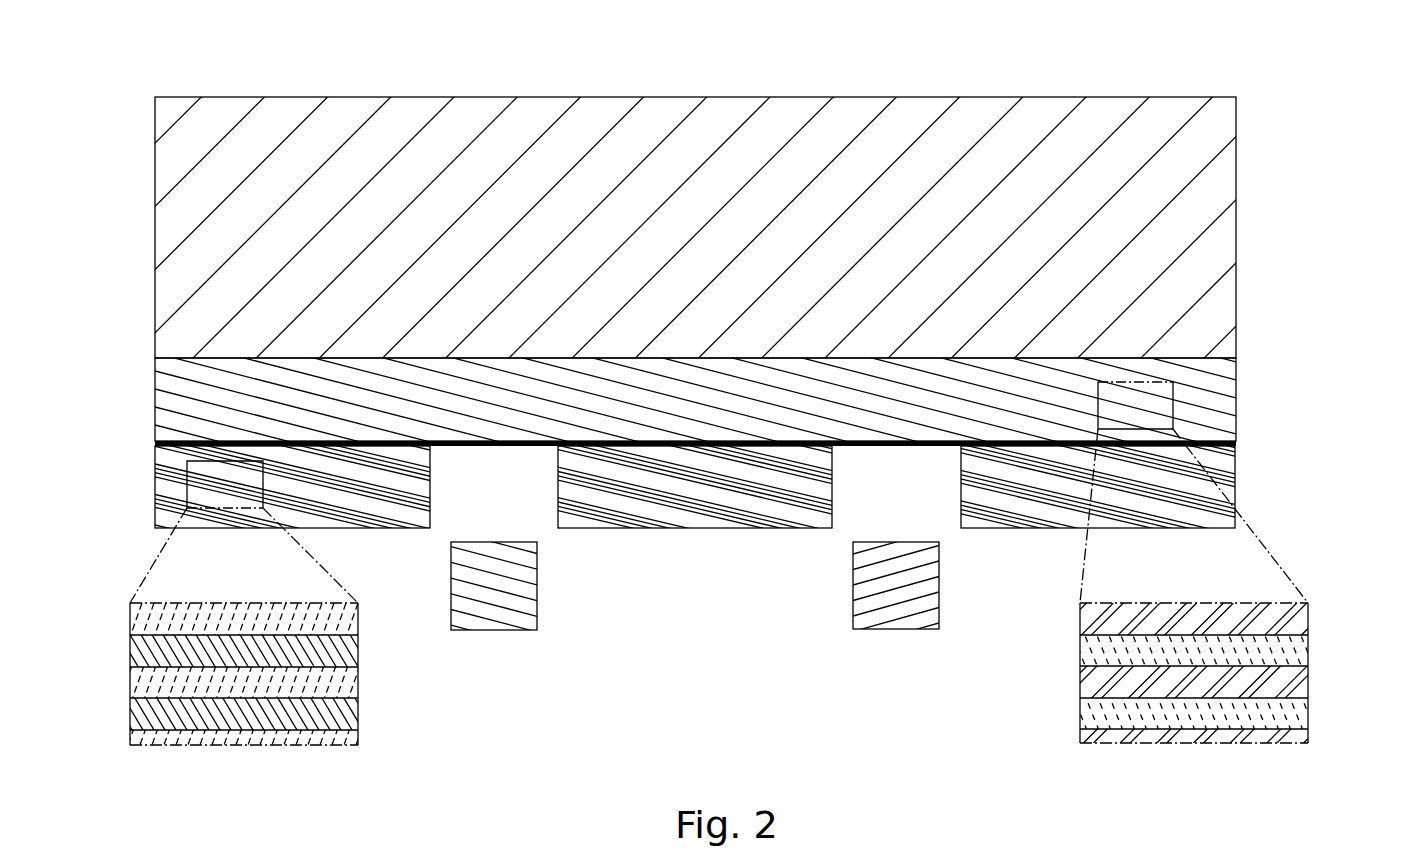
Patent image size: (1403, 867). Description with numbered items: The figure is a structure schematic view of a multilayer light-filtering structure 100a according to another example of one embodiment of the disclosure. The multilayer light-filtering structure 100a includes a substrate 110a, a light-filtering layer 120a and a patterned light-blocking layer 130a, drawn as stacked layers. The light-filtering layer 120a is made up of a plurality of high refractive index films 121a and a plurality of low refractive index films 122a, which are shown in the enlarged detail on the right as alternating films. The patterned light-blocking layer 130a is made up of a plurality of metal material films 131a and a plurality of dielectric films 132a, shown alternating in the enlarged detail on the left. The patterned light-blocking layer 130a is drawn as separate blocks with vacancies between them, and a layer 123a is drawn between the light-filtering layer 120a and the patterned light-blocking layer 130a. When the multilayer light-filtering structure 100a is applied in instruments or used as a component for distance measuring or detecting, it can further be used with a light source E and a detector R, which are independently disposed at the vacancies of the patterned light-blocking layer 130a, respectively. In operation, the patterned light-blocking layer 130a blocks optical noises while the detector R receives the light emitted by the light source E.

The multilayer light-filtering structure 100a is at (105, 56).
The substrate 110a is at (1236, 230).
The light-filtering layer 120a is at (1236, 403).
The high refractive index films 121a is at (1303, 619).
The low refractive index films 122a is at (1303, 648).
The metal layer 123a is at (615, 447).
The patterned light-blocking layer 130a is at (395, 529).
The metal material films 131a is at (140, 625).
The dielectric films 132a is at (140, 651).
The detector R is at (490, 630).
The light source E is at (892, 631).